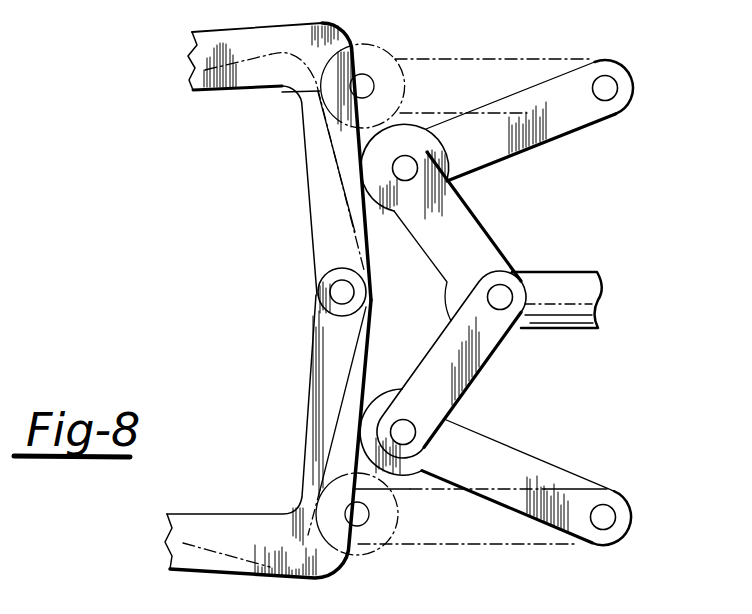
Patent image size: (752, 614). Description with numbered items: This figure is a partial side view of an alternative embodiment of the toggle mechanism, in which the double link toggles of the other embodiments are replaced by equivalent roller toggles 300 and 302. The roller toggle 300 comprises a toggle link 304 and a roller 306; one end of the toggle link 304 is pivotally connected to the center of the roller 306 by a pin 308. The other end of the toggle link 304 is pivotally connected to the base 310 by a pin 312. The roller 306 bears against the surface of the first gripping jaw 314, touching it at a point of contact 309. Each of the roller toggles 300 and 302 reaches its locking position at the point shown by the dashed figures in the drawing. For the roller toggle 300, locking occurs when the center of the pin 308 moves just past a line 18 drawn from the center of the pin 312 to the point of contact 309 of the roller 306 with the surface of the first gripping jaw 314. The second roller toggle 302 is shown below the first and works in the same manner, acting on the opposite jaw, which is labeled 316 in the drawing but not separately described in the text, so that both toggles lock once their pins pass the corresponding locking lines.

The line 18 is at (270, 87).
The roller toggle 300 is at (548, 285).
The roller toggle 302 is at (450, 420).
The toggle link 304 is at (582, 103).
The roller 306 is at (441, 173).
The pin 308 is at (407, 165).
The point of contact 309 is at (306, 103).
The base 310 is at (615, 95).
The pin 312 is at (607, 83).
The first gripping jaw 314 is at (320, 193).
The lower jaw arm 316 is at (309, 407).